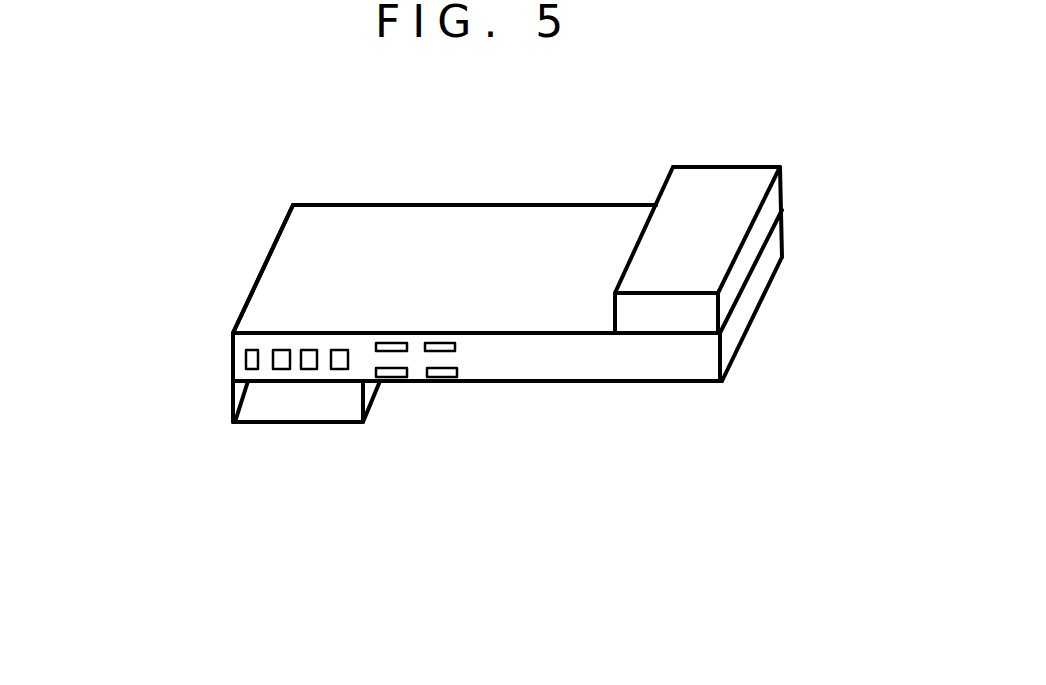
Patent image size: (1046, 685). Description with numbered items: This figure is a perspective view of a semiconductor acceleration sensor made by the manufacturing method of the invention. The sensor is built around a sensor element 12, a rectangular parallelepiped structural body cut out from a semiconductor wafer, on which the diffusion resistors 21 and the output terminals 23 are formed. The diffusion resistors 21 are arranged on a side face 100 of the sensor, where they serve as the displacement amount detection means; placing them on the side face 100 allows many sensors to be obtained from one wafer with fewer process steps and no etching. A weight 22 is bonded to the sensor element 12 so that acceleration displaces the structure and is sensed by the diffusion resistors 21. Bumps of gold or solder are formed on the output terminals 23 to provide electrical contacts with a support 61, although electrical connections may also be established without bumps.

The side face 100 is at (677, 352).
The sensor element 12 is at (520, 350).
The weight 22 is at (685, 245).
The output terminals 23 is at (253, 370).
The diffusion resistors 21 is at (450, 381).
The support 61 is at (312, 405).